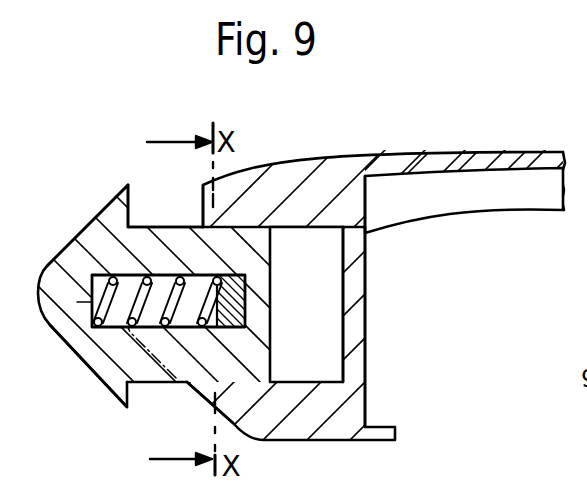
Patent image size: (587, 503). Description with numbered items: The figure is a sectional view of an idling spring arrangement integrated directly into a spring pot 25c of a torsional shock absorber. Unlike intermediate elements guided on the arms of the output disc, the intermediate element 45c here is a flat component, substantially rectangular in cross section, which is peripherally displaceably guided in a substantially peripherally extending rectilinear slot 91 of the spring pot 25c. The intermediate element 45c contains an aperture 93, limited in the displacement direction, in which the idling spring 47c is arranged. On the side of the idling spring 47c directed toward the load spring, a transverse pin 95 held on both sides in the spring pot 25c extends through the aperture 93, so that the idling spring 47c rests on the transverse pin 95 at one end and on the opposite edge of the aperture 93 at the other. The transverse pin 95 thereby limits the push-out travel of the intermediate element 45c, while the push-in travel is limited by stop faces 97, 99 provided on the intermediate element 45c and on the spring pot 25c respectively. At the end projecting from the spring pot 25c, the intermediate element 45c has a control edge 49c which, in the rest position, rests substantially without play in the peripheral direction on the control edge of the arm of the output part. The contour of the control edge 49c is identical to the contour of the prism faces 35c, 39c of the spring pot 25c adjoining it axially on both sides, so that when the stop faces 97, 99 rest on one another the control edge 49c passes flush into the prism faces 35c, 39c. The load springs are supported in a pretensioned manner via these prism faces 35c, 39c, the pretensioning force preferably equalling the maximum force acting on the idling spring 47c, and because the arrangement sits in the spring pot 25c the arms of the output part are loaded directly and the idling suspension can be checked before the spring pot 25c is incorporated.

The spring pot 25c is at (350, 172).
The prism face 35c is at (176, 212).
The prism face 39c is at (185, 384).
The intermediate element 45c is at (100, 193).
The idling spring 47c is at (88, 236).
The control edge 49c is at (75, 358).
The slot 91 is at (328, 273).
The aperture 93 is at (104, 330).
The transverse pin 95 is at (247, 306).
The stop face 97 is at (131, 200).
The stop face 99 is at (200, 198).